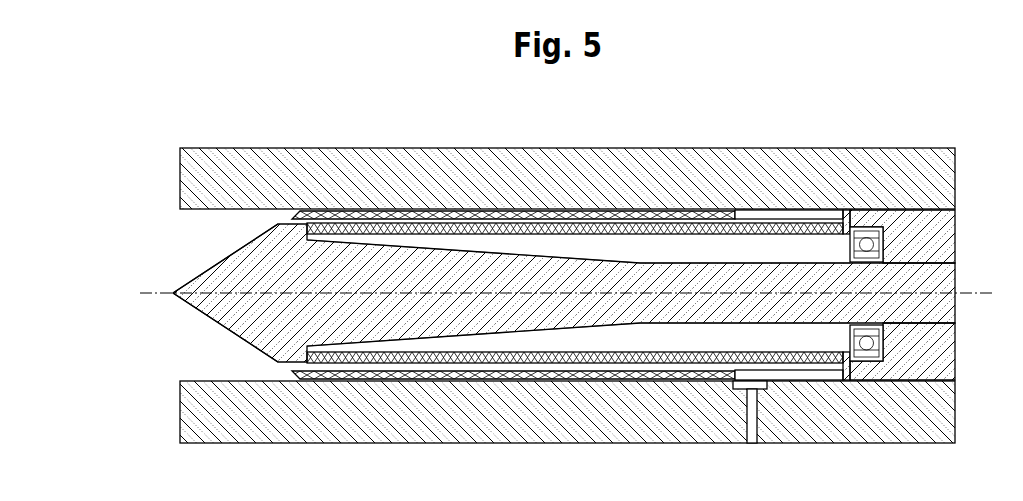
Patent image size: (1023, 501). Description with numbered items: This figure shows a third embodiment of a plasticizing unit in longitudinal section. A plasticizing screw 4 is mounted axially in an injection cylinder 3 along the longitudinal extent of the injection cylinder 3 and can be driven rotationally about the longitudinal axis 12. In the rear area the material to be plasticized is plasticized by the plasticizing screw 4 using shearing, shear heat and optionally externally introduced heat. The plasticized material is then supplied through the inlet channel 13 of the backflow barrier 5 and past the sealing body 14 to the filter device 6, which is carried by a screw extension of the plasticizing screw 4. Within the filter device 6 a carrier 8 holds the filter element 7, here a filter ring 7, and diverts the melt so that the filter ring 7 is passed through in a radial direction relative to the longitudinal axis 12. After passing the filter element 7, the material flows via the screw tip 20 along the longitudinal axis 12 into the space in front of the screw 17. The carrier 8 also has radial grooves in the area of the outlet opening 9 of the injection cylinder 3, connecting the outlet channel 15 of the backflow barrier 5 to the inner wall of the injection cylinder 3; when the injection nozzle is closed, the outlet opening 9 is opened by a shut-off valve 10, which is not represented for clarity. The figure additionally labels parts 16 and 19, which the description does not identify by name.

The injection cylinder 3 is at (559, 267).
The plasticizing screw 4 is at (527, 245).
The backflow barrier 5 is at (855, 363).
The filter device 6 is at (614, 184).
The filter element 7 is at (664, 226).
The carrier 8 is at (734, 211).
The outlet opening 9 is at (763, 440).
The shut-off valve 10 is at (757, 390).
The longitudinal axis 12 is at (152, 292).
The inlet channel 13 is at (923, 366).
The sealing body 14 is at (865, 363).
The outlet channel 15 is at (578, 369).
The insulation layer 16 is at (305, 212).
The space in front of the screw 17 is at (214, 260).
The gap 19 is at (727, 338).
The screw tip 20 is at (239, 310).